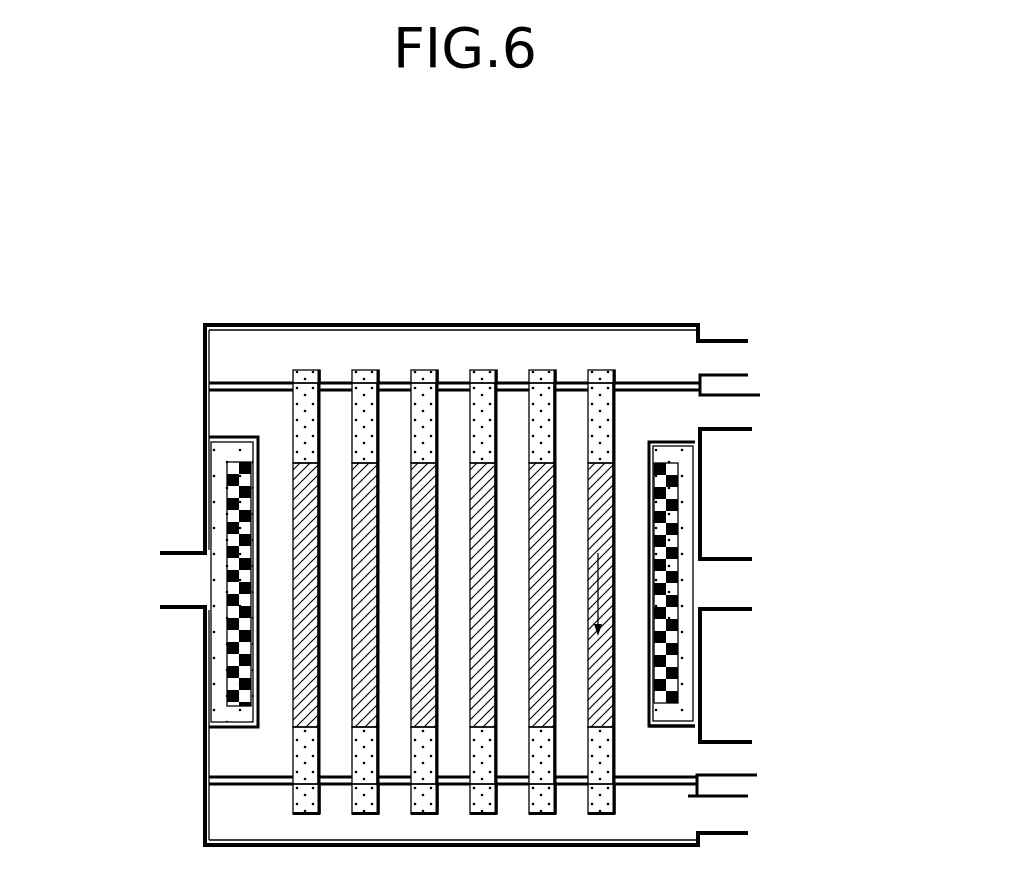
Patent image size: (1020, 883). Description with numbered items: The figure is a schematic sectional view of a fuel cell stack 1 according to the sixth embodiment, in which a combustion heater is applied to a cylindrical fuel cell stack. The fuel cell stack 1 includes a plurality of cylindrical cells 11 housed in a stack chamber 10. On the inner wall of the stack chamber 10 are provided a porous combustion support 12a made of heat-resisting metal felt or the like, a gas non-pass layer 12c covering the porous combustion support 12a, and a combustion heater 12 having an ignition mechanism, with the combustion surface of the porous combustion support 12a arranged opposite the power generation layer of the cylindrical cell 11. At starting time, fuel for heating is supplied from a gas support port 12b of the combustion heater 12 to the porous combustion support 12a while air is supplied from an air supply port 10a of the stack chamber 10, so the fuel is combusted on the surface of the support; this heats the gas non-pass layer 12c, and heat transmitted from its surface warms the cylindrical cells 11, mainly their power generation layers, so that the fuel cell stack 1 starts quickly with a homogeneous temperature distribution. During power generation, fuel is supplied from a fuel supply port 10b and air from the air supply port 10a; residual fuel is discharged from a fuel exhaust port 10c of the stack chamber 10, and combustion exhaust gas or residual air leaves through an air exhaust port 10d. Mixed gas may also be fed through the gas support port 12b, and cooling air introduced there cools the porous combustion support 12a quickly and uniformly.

The fuel cell stack 1 is at (641, 270).
The stack chamber 10 is at (205, 411).
The air supply port 10a is at (727, 413).
The fuel supply port 10b is at (727, 353).
The fuel exhaust port 10c is at (723, 817).
The air exhaust port 10d is at (723, 760).
The cylindrical cell 11 is at (500, 377).
The combustion heater 12 is at (426, 582).
The porous combustion support 12a is at (205, 648).
The gas support port 12b is at (190, 588).
The gas non-pass layer 12c is at (678, 718).